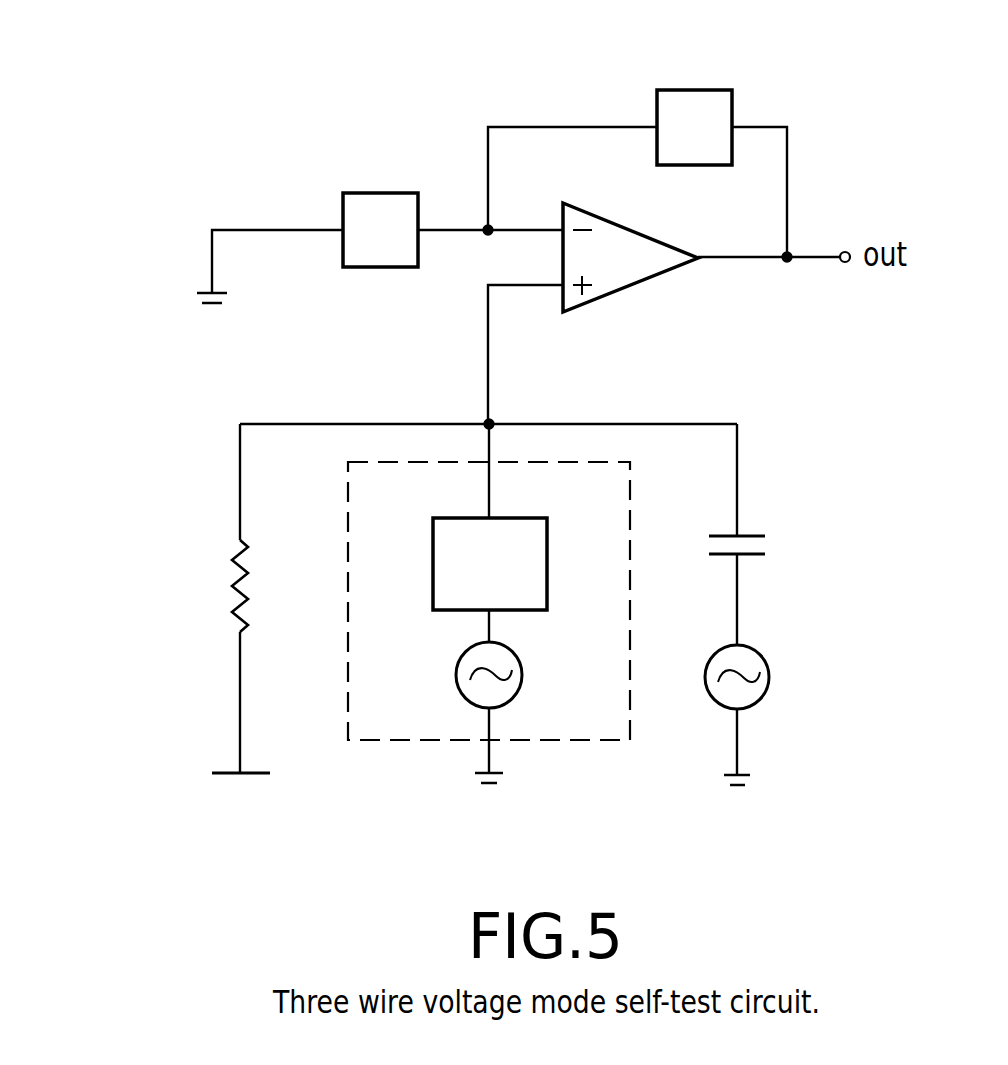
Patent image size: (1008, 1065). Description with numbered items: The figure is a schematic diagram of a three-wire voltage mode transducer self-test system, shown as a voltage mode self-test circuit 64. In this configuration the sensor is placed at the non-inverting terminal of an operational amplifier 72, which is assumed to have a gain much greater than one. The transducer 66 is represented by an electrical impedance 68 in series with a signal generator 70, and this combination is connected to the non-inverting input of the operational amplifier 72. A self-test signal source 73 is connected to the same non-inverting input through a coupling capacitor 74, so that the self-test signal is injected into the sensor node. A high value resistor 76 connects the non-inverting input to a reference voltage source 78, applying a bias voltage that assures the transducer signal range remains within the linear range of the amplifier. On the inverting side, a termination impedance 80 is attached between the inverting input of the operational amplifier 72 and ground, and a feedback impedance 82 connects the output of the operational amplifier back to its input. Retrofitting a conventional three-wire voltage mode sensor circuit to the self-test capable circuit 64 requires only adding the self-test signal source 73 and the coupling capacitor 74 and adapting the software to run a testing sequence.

The voltage mode self-test circuit 64 is at (173, 197).
The transducer 66 is at (632, 498).
The electrical impedance 68 is at (433, 560).
The signal generator 70 is at (457, 657).
The operational amplifier 72 is at (637, 285).
The self-test signal source 73 is at (765, 705).
The coupling capacitor 74 is at (750, 563).
The high value resistor 76 is at (247, 558).
The reference voltage source 78 is at (218, 778).
The impedance 80 is at (372, 192).
The feedback impedance 82 is at (692, 88).